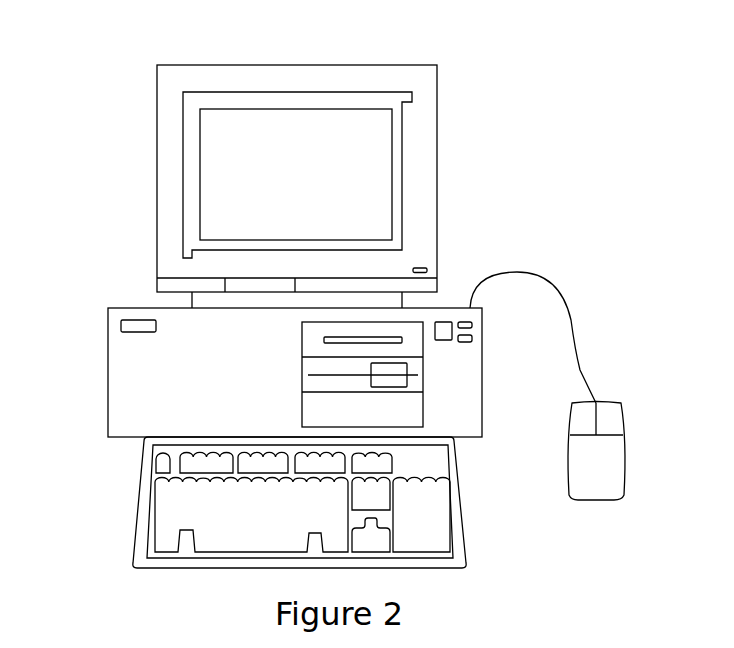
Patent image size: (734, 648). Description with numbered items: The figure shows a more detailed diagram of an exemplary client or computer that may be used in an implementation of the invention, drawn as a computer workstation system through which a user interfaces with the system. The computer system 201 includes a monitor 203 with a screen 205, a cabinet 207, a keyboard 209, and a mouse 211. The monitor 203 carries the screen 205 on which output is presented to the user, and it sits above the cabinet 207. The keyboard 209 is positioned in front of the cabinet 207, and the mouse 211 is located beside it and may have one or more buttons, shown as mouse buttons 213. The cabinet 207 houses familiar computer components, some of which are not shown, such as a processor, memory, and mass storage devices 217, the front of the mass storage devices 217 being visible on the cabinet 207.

The computer system 201 is at (457, 46).
The monitor 203 is at (437, 157).
The screen 205 is at (217, 162).
The cabinet 207 is at (137, 312).
The keyboard 209 is at (180, 567).
The mouse 211 is at (598, 488).
The mouse buttons 213 is at (587, 423).
The mass storage devices 217 is at (417, 325).